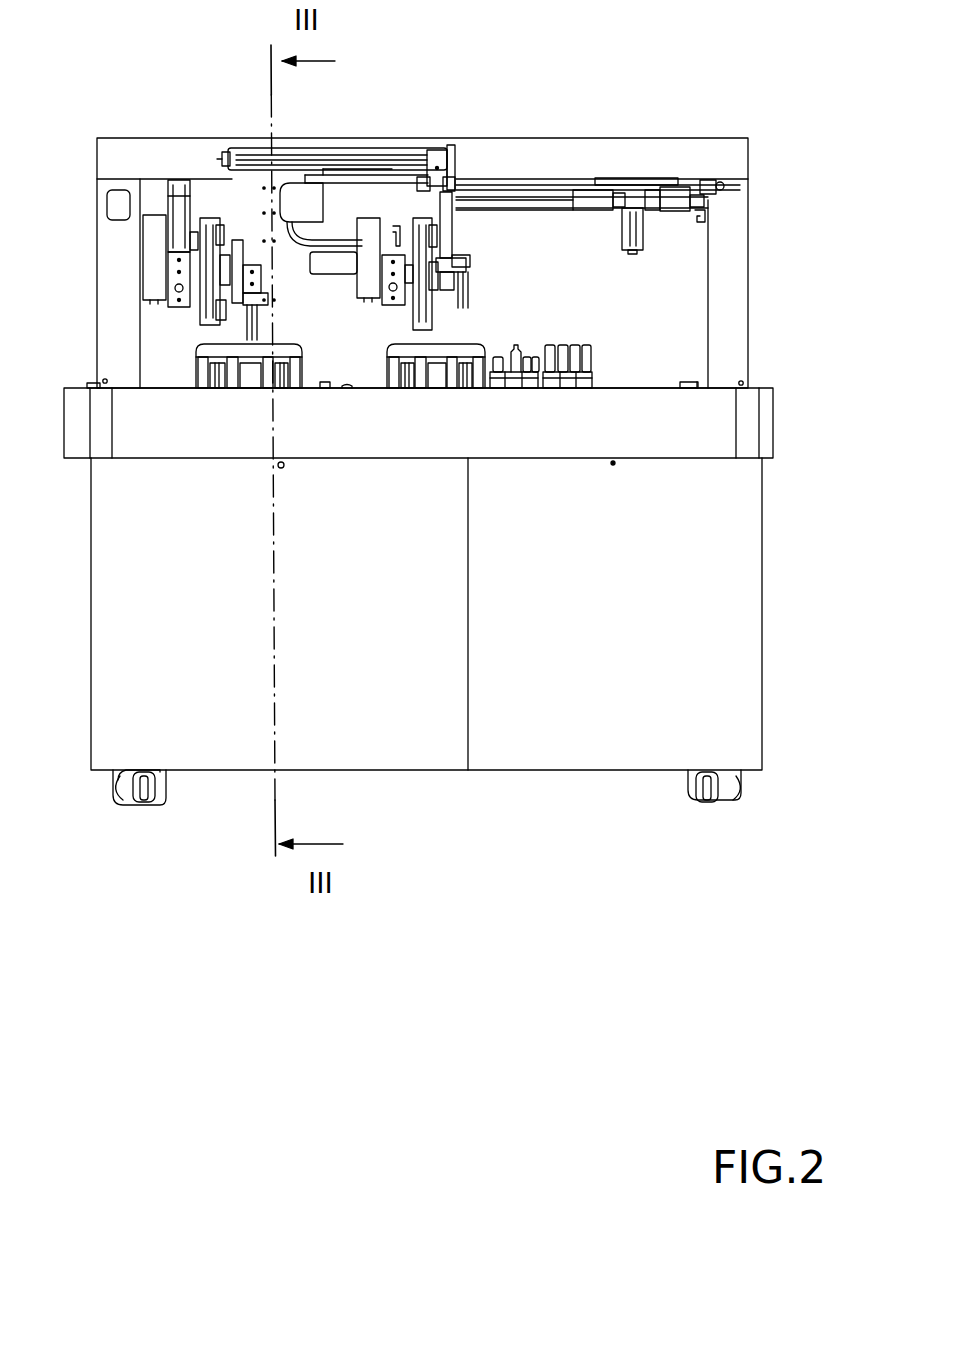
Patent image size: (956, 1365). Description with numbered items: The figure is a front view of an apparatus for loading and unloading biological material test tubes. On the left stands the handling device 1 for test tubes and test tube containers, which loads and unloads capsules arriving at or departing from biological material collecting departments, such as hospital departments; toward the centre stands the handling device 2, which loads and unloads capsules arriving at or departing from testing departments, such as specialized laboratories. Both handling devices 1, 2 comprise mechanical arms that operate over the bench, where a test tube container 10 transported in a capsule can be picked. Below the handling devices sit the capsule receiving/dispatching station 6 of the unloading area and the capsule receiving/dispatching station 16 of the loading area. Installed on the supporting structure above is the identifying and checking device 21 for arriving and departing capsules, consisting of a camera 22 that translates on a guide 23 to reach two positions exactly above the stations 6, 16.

The handling device 1 is at (158, 279).
The handling device 2 is at (465, 265).
The capsule receiving/dispatching station 6 is at (240, 395).
The test tube container 10 is at (582, 383).
The capsule receiving/dispatching station 16 is at (448, 394).
The identifying and checking device 21 is at (447, 136).
The camera 22 is at (457, 162).
The guide 23 is at (357, 163).